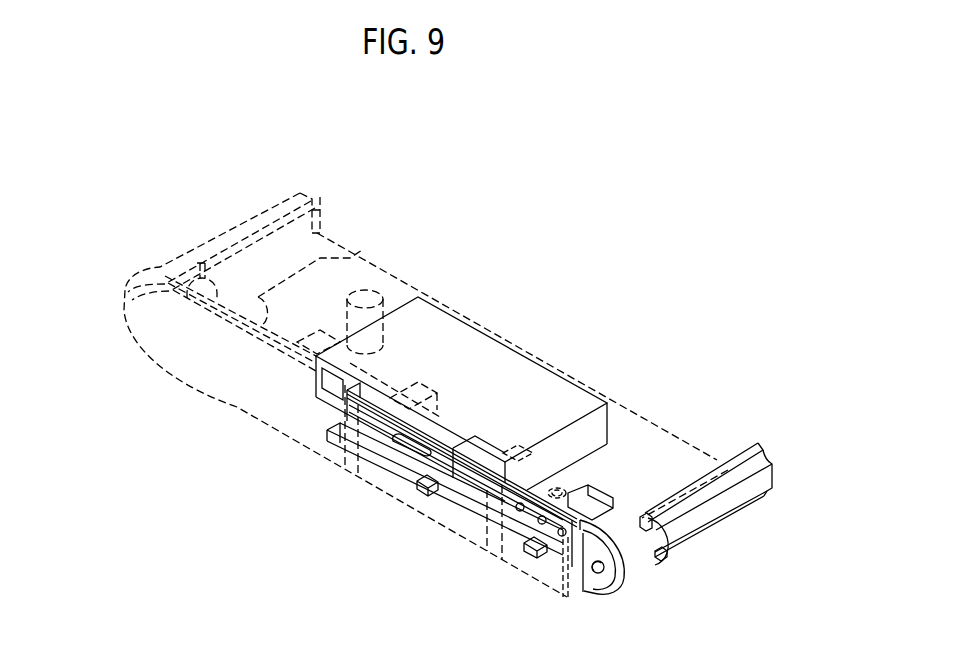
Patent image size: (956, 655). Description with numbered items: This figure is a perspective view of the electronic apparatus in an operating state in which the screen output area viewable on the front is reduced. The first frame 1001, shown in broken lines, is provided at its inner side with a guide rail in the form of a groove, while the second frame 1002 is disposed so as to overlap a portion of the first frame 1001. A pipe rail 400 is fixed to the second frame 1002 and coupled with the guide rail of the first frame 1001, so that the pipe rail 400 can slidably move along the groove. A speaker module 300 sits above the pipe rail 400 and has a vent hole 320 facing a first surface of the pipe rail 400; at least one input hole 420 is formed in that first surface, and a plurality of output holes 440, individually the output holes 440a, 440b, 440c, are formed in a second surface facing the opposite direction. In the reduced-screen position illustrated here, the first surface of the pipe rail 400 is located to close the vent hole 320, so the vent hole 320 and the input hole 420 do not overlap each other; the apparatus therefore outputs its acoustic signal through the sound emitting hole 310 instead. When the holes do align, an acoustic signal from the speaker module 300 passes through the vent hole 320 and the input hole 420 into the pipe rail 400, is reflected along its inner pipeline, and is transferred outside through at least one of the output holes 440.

The first frame 1001 is at (128, 301).
The second frame 1002 is at (766, 482).
The speaker module 300 is at (467, 335).
The sound emitting hole 310 is at (317, 397).
The vent hole 320 is at (467, 457).
The pipe rail 400 is at (565, 507).
The input hole 420 is at (433, 438).
The output holes 440 is at (400, 559).
The output hole 440a is at (525, 542).
The output hole 440b is at (540, 519).
The output hole 440c is at (518, 513).